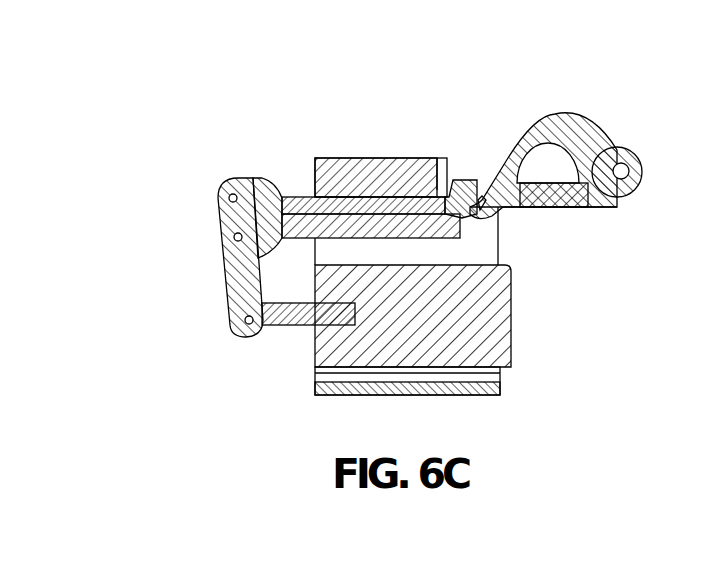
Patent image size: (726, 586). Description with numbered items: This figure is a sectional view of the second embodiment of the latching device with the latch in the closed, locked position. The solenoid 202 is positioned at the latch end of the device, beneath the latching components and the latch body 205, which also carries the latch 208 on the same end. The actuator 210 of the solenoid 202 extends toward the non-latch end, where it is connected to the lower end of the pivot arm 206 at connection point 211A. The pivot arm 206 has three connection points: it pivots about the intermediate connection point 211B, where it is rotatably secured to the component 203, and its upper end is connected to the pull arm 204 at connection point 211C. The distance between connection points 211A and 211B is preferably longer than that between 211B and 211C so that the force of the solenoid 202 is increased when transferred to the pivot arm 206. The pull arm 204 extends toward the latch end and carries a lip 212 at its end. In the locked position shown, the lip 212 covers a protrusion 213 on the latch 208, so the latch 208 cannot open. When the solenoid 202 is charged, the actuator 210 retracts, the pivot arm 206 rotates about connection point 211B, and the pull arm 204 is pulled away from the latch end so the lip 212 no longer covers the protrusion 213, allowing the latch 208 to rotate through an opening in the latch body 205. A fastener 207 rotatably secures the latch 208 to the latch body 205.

The solenoid 202 is at (468, 318).
The non-latch end component 203 is at (226, 260).
The pull arm 204 is at (265, 177).
The latch body 205 is at (565, 200).
The pivot arm 206 is at (229, 295).
The fastener 207 is at (641, 186).
The latch 208 is at (560, 117).
The actuator 210 is at (283, 326).
The connection point 211A is at (243, 324).
The connection point 211B is at (220, 231).
The connection point 211C is at (222, 195).
The lip 212 is at (467, 184).
The protrusion 213 is at (480, 196).